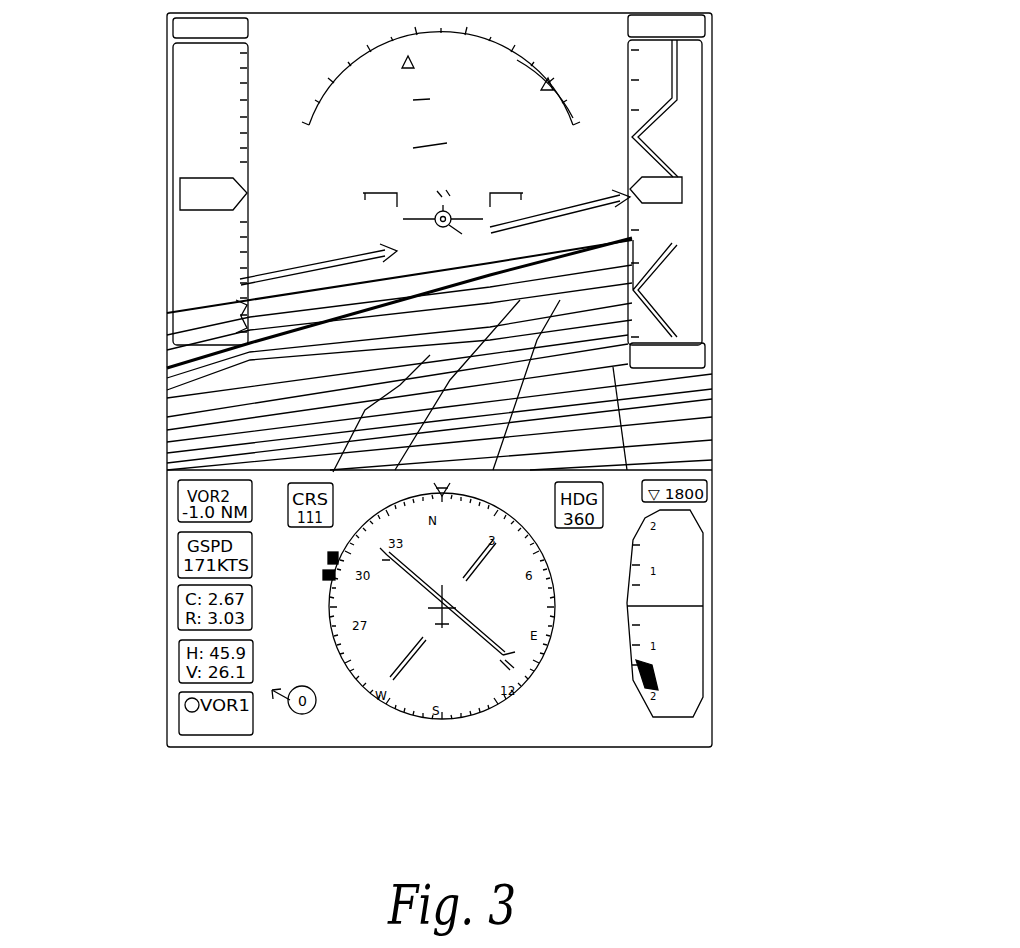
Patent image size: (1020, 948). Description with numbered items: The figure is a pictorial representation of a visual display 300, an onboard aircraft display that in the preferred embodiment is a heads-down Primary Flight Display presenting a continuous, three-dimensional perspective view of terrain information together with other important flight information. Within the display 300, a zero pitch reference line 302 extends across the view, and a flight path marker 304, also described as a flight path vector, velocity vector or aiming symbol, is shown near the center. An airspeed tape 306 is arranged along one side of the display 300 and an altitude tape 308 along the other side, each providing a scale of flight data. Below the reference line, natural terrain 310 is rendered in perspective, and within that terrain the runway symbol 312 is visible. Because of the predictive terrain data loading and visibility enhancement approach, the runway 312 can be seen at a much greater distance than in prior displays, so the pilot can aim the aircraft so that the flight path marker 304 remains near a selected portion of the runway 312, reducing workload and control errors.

The visual display 300 is at (752, 76).
The zero pitch reference line 302 is at (317, 262).
The flight path marker 304 is at (452, 210).
The airspeed tape 306 is at (178, 140).
The altitude tape 308 is at (680, 118).
The natural terrain 310 is at (340, 426).
The runway symbol 312 is at (468, 338).